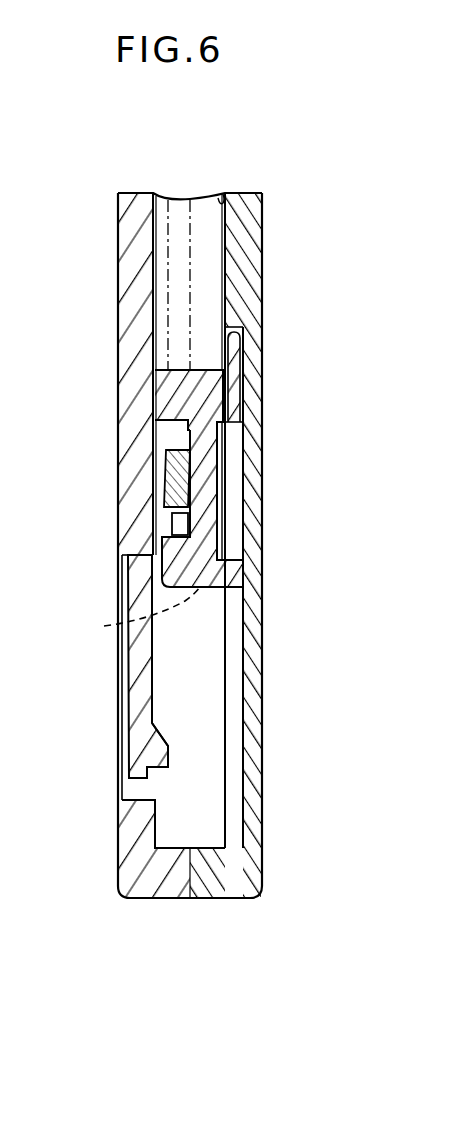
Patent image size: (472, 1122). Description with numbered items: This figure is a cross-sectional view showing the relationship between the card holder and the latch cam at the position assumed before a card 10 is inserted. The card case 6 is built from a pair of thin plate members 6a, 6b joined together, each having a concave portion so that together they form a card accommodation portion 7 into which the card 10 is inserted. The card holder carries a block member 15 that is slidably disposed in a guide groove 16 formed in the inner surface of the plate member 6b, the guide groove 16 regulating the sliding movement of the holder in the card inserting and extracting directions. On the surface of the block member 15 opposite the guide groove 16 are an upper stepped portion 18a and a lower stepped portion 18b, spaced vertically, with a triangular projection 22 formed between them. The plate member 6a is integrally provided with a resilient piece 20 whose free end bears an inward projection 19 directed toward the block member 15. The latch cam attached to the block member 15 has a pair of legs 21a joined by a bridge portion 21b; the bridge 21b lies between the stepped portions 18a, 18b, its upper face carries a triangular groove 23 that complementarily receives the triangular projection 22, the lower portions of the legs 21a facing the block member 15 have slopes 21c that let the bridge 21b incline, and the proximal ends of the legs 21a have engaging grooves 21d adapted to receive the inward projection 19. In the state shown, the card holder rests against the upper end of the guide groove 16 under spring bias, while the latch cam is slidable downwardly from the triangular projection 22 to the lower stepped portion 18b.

The card case 6 is at (268, 218).
The plate member 6a is at (53, 372).
The plate member 6b is at (262, 268).
The card accommodation portion 7 is at (223, 200).
The card 10 is at (192, 200).
The block member 15 is at (217, 492).
The guide groove 16 is at (232, 703).
The upper stepped portion 18a is at (160, 423).
The lower stepped portion 18b is at (190, 541).
The inward projection 19 is at (160, 755).
The resilient piece 20 is at (135, 677).
The legs 21a is at (190, 528).
The bridge portion 21b is at (166, 512).
The slopes 21c is at (104, 626).
The engaging grooves 21d is at (172, 526).
The triangular projection 22 is at (182, 448).
The triangular groove 23 is at (200, 470).